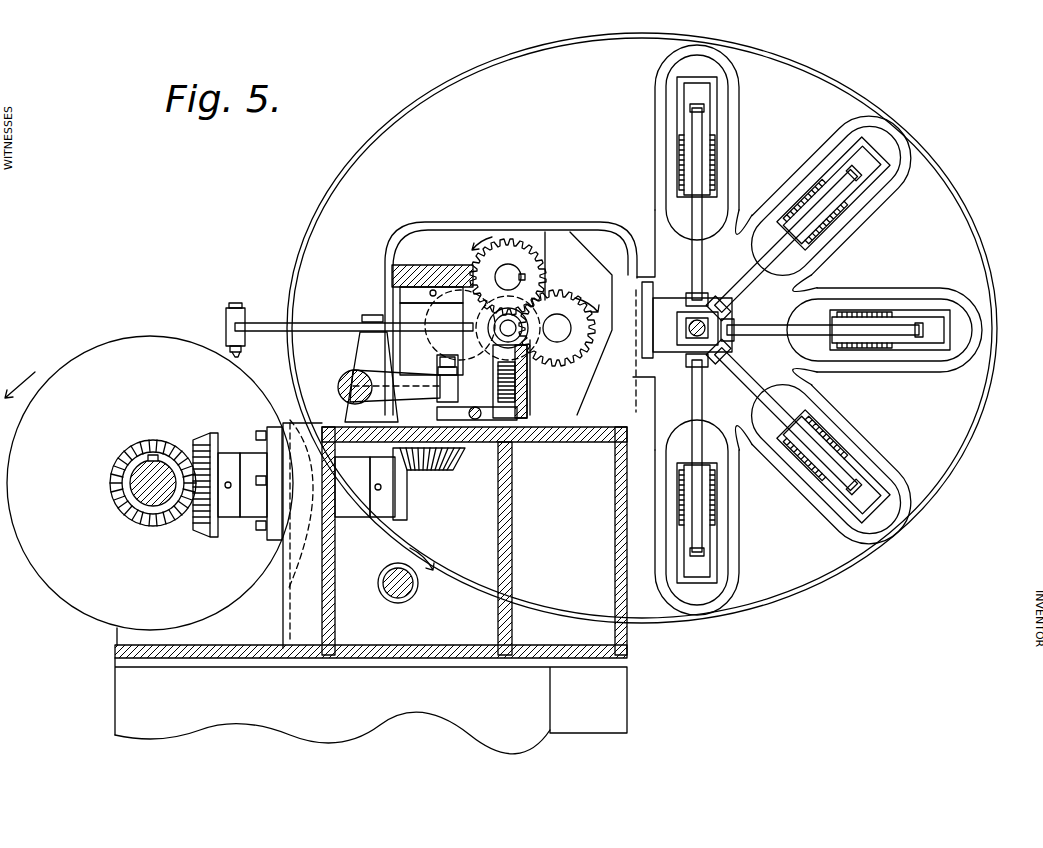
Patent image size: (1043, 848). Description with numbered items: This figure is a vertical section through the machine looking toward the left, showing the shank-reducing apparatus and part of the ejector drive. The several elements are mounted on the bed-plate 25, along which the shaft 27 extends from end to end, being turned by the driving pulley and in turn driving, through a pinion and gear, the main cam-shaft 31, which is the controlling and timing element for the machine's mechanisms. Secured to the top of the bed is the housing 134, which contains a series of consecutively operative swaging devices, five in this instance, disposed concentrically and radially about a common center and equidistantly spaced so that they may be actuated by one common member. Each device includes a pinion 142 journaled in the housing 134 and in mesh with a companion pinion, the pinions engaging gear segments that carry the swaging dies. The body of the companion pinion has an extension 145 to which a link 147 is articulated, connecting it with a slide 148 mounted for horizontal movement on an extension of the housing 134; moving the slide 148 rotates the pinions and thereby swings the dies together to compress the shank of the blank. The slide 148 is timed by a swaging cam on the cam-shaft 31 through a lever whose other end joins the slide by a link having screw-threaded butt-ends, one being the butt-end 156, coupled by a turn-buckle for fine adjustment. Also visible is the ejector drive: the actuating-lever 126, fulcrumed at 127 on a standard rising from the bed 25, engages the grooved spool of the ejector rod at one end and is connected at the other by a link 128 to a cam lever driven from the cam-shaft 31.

The housing 134 is at (481, 64).
The extension 145 is at (710, 120).
The pinion 142 is at (812, 205).
The link 147 is at (835, 320).
The butt-end 156 is at (685, 330).
The slide 148 is at (663, 345).
The actuating-lever 126 is at (262, 322).
The fulcrum 127 is at (372, 318).
The link 128 is at (226, 316).
The main cam-shaft 31 is at (148, 486).
The shaft 27 is at (420, 592).
The bed-plate 25 is at (313, 620).